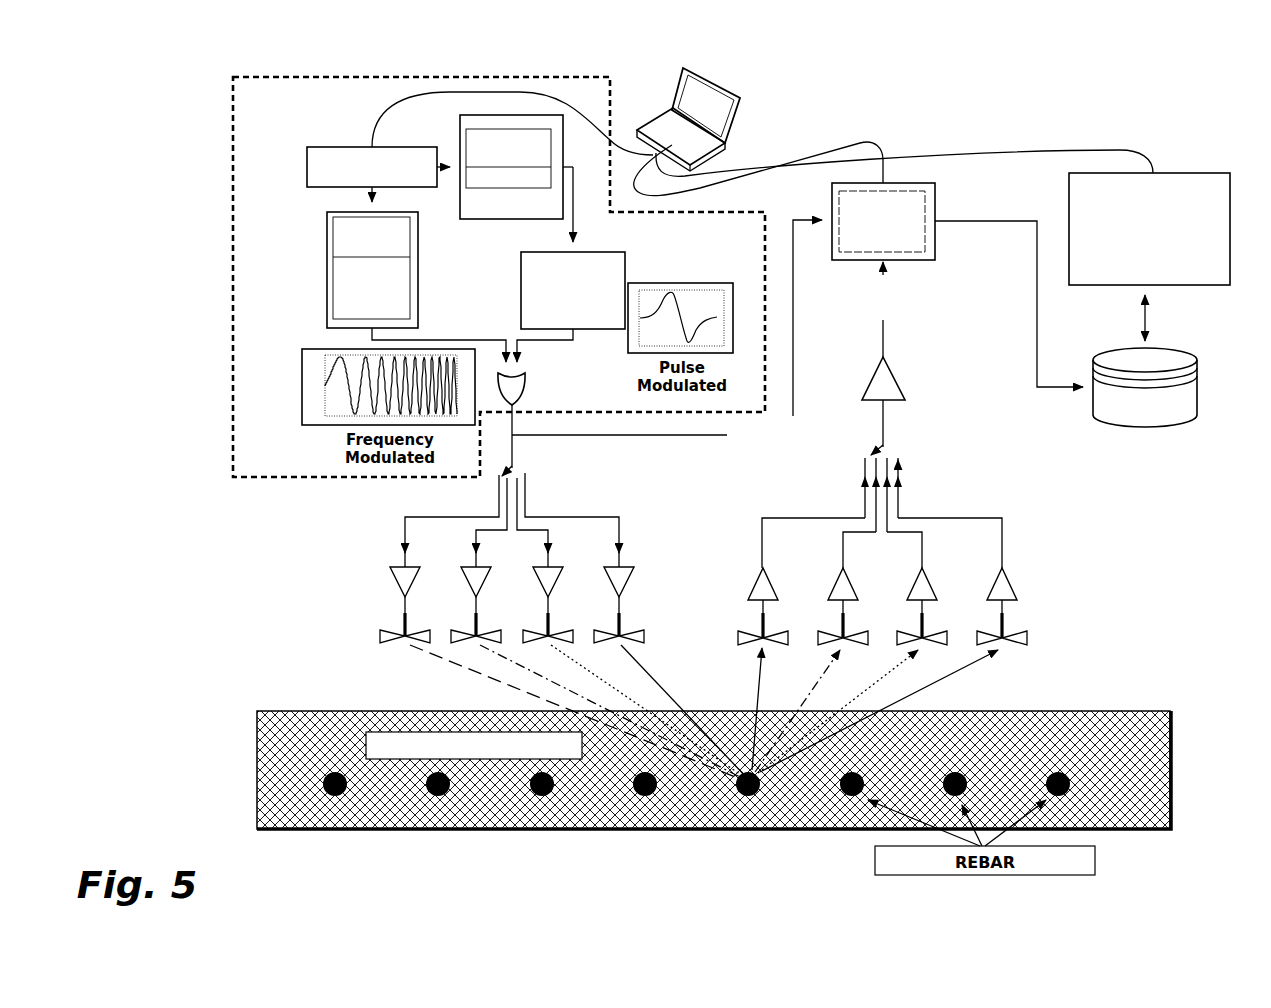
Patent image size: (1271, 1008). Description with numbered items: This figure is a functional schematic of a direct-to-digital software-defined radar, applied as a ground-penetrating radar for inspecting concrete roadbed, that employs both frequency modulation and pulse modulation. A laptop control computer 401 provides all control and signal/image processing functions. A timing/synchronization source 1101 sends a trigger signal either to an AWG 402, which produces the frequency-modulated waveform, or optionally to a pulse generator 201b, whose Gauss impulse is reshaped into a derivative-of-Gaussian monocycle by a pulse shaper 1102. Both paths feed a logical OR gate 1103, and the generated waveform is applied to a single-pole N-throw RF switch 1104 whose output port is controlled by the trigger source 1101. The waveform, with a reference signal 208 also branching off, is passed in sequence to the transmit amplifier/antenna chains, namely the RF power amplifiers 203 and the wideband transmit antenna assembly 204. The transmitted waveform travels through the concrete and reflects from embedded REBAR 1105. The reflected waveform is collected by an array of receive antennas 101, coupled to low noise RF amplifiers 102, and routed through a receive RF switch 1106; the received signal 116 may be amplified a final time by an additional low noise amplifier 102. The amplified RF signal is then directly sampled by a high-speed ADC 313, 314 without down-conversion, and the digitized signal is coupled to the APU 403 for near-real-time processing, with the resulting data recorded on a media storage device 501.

The control computer 401 is at (715, 83).
The AWG 402 is at (327, 228).
The APU 403 is at (1115, 285).
The media storage device 501 is at (1197, 380).
The timing/synchronization source 1101 is at (325, 147).
The pulse generator 201b is at (510, 220).
The pulse shaper 1102 is at (610, 252).
The logical OR gate 1103 is at (525, 390).
The SPnT RF switch 1104 is at (503, 458).
The reference signal line 208 is at (700, 435).
The transmit amplifier 203 is at (633, 567).
The antenna assembly 204 is at (405, 643).
The REBAR 1105 is at (557, 795).
The receive antennas 101 is at (737, 633).
The low noise RF amplifiers 102 is at (890, 370).
The RF switch 1106 is at (887, 448).
The received signal 116 is at (883, 320).
The ADC 313 is at (858, 279).
The analog to digital converter (ADC) 314 is at (937, 243).